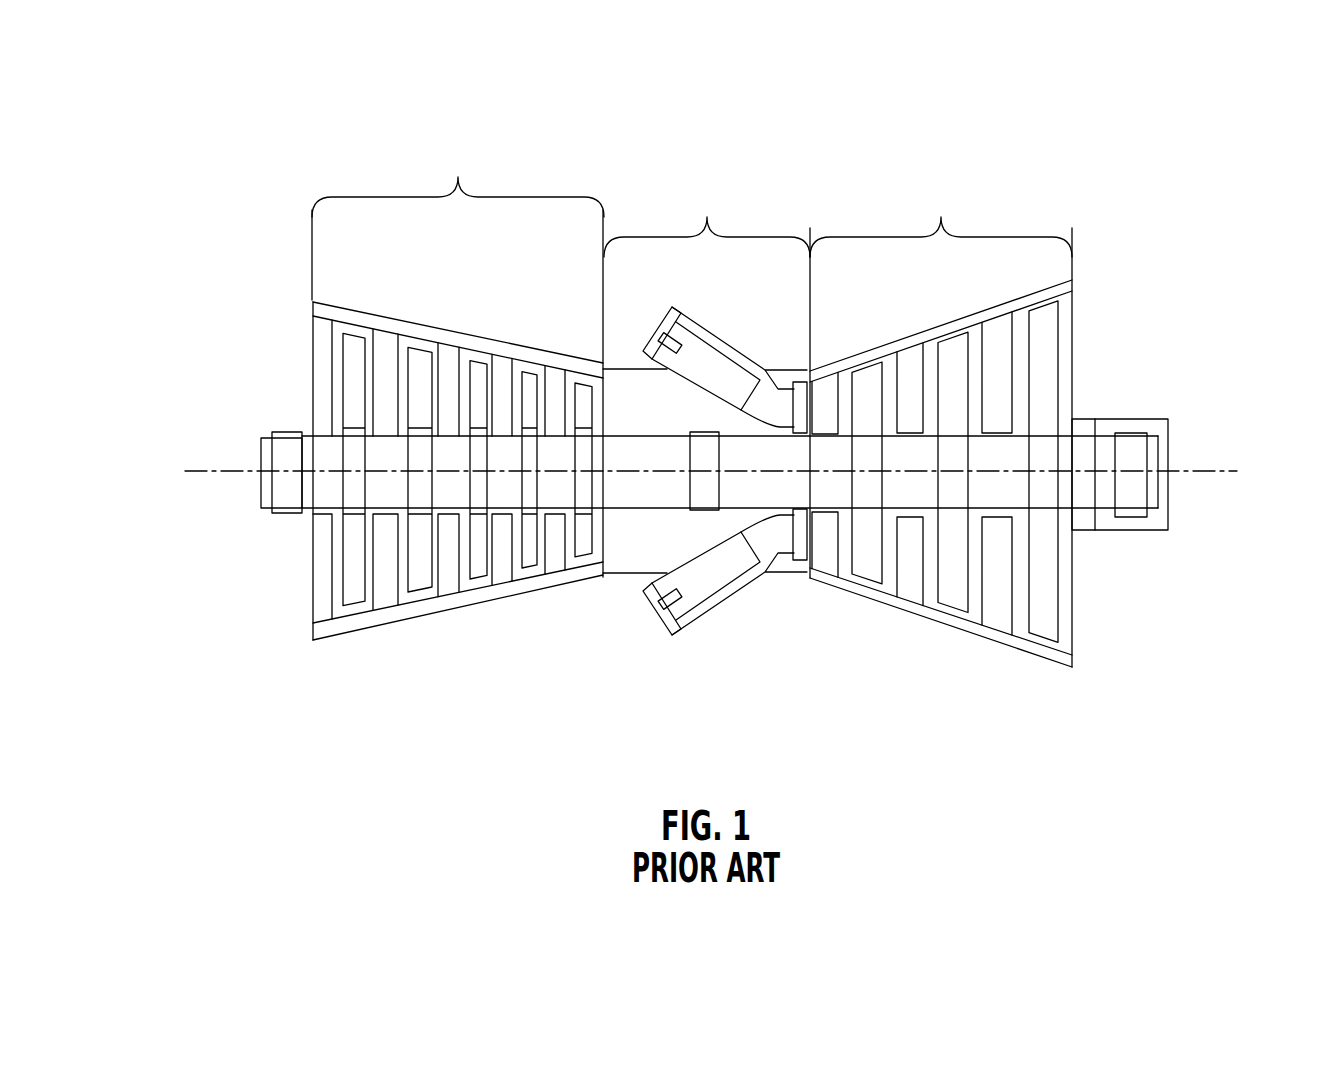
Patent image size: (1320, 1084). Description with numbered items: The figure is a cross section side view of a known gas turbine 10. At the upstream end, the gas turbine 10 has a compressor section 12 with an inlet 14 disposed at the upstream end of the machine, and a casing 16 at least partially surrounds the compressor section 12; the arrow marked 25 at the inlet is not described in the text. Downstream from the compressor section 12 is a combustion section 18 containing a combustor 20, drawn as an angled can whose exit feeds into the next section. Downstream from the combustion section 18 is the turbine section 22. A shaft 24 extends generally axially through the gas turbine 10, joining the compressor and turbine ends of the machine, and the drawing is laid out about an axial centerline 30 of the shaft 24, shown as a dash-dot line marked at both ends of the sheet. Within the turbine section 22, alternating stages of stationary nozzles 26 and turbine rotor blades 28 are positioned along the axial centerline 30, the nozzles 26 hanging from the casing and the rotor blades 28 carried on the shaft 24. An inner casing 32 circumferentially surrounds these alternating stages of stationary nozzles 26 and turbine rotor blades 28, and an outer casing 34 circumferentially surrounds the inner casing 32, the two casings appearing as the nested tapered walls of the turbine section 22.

The gas turbine 10 is at (647, 168).
The compressor section 12 is at (437, 420).
The inlet 14 is at (312, 360).
The casing 16 is at (320, 640).
The combustion section 18 is at (707, 419).
The combustor 20 is at (701, 325).
The turbine section 22 is at (941, 445).
The shaft 24 is at (622, 453).
The air flow 25 is at (306, 568).
The stationary nozzles 26 is at (917, 363).
The turbine rotor blades 28 is at (862, 565).
The axial centerline 30 is at (185, 471).
The inner casing 32 is at (953, 589).
The outer casing 34 is at (997, 645).